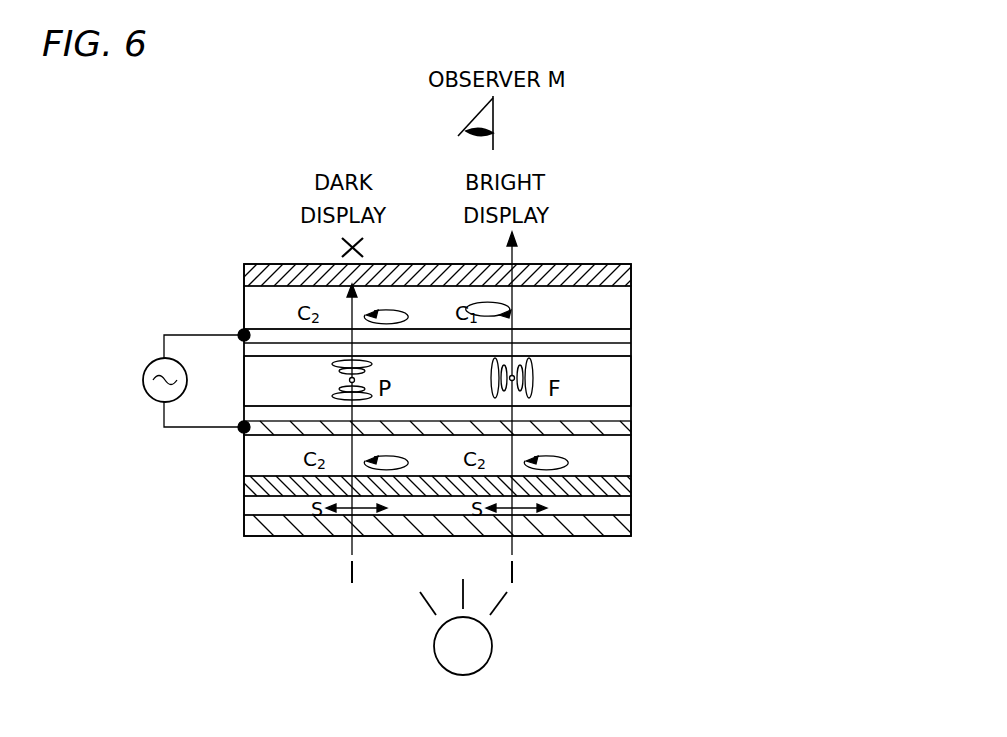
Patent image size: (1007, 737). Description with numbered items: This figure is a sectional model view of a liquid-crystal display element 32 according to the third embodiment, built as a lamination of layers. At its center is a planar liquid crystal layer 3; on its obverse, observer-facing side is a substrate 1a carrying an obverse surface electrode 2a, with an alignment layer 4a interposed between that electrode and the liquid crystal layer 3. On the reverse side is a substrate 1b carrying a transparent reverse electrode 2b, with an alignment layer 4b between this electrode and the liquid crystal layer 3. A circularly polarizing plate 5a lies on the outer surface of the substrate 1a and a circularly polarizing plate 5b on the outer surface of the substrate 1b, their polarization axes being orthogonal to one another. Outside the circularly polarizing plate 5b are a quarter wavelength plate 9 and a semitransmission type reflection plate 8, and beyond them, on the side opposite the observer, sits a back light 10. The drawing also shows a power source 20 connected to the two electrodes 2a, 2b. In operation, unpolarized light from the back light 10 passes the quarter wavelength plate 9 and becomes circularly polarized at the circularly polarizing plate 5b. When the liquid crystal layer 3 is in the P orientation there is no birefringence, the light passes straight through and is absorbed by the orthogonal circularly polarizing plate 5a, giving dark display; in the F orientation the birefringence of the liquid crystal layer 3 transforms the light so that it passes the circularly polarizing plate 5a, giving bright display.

The liquid-crystal display element 32 is at (617, 232).
The circularly polarizing plate 5a is at (634, 272).
The substrate 1a is at (634, 301).
The obverse surface electrode 2a is at (634, 330).
The alignment layer 4a is at (634, 355).
The liquid crystal layer 3 is at (634, 379).
The alignment layer 4b is at (634, 406).
The reverse electrode 2b is at (634, 431).
The substrate 1b is at (634, 457).
The circularly polarizing plate 5b is at (634, 484).
The ¼ wavelength plate 9 is at (634, 508).
The semitransmission type reflection plate 8 is at (634, 531).
The power source 20 is at (142, 379).
The back light 10 is at (492, 640).